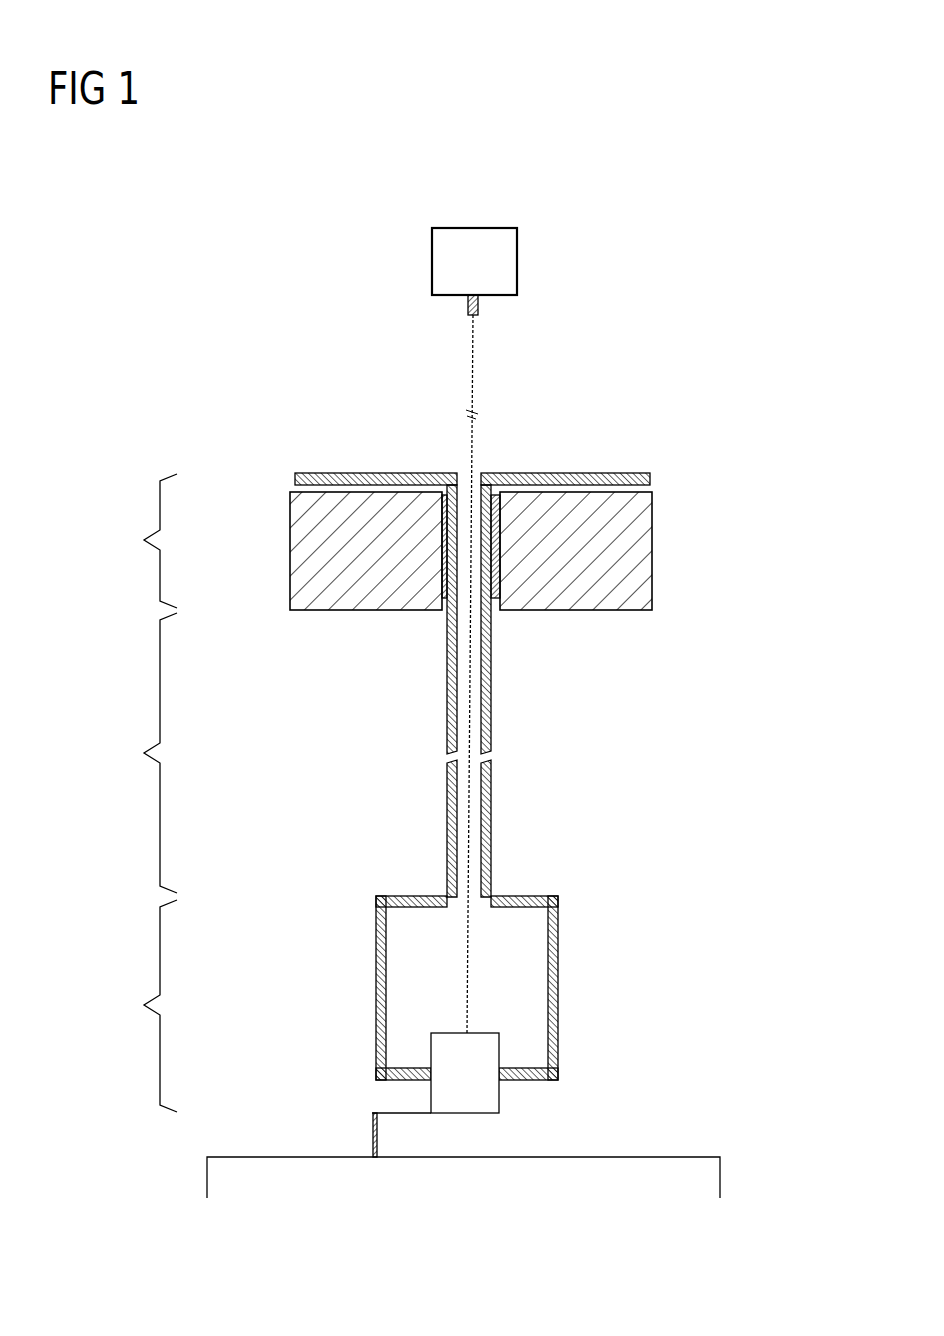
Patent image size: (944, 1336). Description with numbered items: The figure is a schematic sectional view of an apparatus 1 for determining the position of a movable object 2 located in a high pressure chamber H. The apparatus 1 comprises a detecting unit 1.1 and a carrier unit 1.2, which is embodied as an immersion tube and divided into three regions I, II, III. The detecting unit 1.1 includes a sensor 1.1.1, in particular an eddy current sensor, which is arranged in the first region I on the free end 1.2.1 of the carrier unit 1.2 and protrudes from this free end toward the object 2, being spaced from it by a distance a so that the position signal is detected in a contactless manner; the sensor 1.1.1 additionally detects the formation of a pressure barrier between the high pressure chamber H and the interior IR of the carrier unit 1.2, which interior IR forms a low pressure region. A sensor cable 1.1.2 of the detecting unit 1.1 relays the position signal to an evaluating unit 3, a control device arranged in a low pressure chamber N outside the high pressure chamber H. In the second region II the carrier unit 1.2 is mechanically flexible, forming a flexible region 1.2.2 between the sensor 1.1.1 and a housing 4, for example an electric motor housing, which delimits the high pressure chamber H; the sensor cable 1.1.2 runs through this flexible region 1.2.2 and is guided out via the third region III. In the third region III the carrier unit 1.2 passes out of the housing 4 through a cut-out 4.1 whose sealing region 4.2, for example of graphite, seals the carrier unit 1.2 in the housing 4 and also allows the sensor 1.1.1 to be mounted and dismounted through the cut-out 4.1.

The apparatus 1 is at (312, 392).
The detecting unit 1.1 is at (452, 1013).
The sensor 1.1.1 is at (442, 1050).
The sensor cable 1.1.2 is at (473, 377).
The carrier unit 1.2 is at (490, 691).
The free end 1.2.1 is at (396, 1080).
The flexible region 1.2.2 is at (491, 695).
The movable object 2 is at (300, 1157).
The evaluating unit 3 is at (517, 259).
The housing 4 is at (302, 553).
The cut-out 4.1 is at (443, 603).
The sealing region 4.2 is at (505, 567).
The distance a is at (393, 1135).
The high pressure chamber H is at (585, 762).
The low pressure chamber N is at (644, 392).
The interior IR is at (458, 793).
The first region I is at (148, 1006).
The second region II is at (144, 753).
The third region III is at (138, 541).